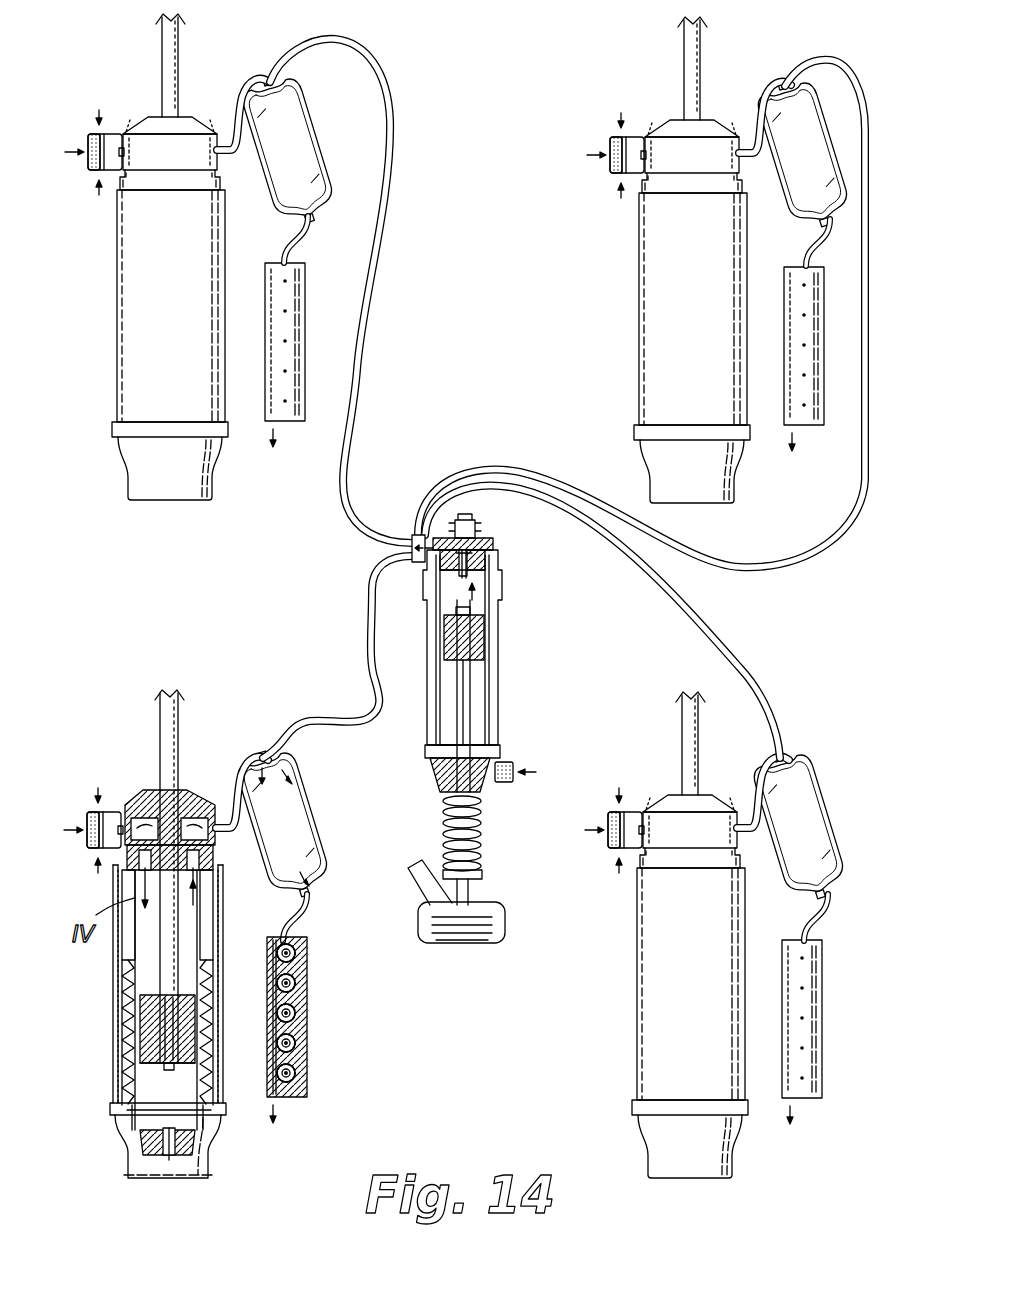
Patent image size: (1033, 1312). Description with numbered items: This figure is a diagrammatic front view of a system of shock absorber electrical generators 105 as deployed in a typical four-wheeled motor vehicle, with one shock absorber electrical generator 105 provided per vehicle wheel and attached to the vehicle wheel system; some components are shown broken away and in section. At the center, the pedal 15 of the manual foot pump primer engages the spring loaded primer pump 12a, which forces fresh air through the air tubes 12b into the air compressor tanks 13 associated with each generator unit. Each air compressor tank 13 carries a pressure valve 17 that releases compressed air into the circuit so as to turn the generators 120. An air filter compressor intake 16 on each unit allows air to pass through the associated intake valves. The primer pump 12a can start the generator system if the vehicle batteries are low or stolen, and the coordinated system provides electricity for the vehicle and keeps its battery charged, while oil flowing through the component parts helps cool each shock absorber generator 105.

The shock absorber electrical generator 105 is at (95, 356).
The air filter compressor intake 16 is at (110, 133).
The air compressor tank 13 is at (325, 143).
The pressure valve 17 is at (322, 212).
The generators 120 is at (302, 950).
The air tube 12b is at (362, 321).
The spring loaded primer pump 12a is at (526, 700).
The pedal 15 is at (508, 930).